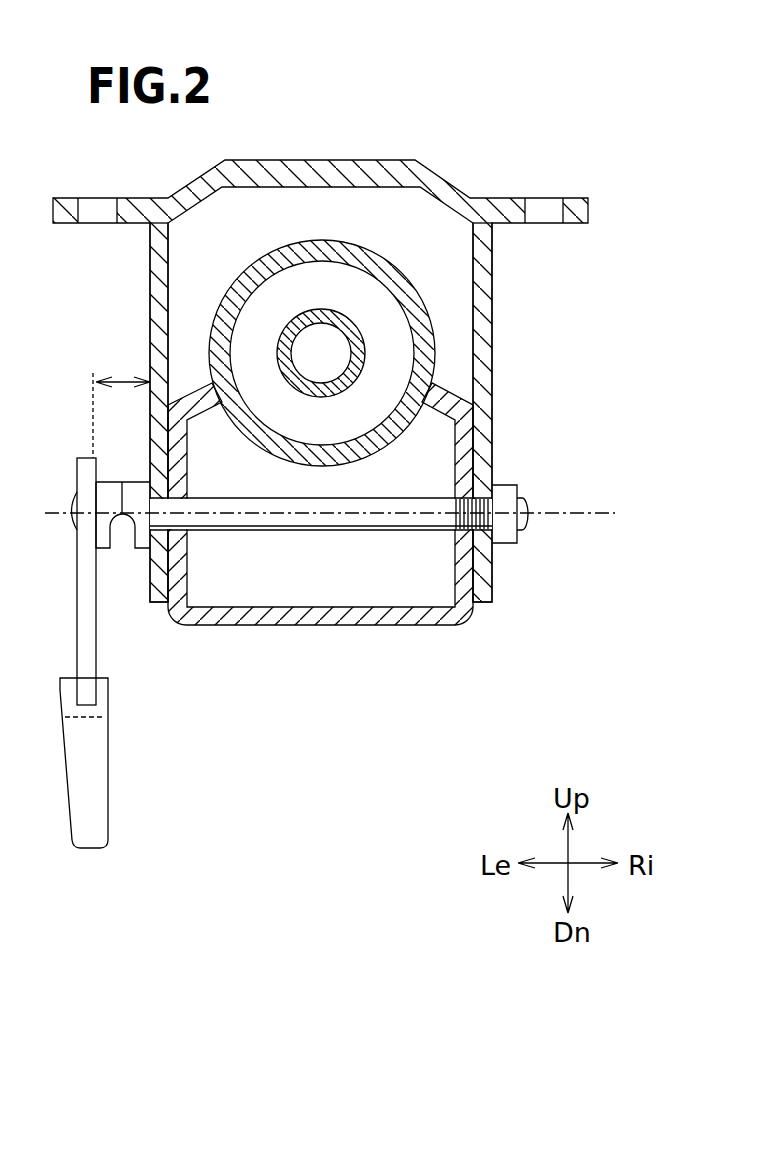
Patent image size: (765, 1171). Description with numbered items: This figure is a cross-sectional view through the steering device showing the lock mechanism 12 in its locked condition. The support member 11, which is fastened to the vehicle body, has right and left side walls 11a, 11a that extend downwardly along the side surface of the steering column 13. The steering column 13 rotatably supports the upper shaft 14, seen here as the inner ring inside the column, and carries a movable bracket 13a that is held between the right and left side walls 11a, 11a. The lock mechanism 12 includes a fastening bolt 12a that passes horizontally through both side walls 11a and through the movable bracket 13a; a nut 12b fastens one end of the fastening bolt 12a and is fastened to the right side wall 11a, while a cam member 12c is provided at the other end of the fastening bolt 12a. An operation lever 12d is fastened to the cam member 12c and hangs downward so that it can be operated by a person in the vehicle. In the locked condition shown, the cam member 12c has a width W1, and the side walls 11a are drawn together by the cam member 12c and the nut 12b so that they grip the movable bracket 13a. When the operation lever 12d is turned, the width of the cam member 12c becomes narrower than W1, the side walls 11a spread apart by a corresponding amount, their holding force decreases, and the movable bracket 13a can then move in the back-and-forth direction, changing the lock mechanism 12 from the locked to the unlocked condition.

The support member 11 is at (325, 160).
The side wall 11a is at (150, 295).
The lock mechanism 12 is at (308, 652).
The fastening bolt 12a is at (340, 530).
The nut 12b is at (503, 547).
The cam member 12c is at (135, 495).
The operation lever 12d is at (119, 653).
The steering column 13 is at (415, 291).
The movable bracket 13a is at (475, 447).
The upper shaft 14 is at (312, 312).
The width of the cam member W1 is at (121, 401).